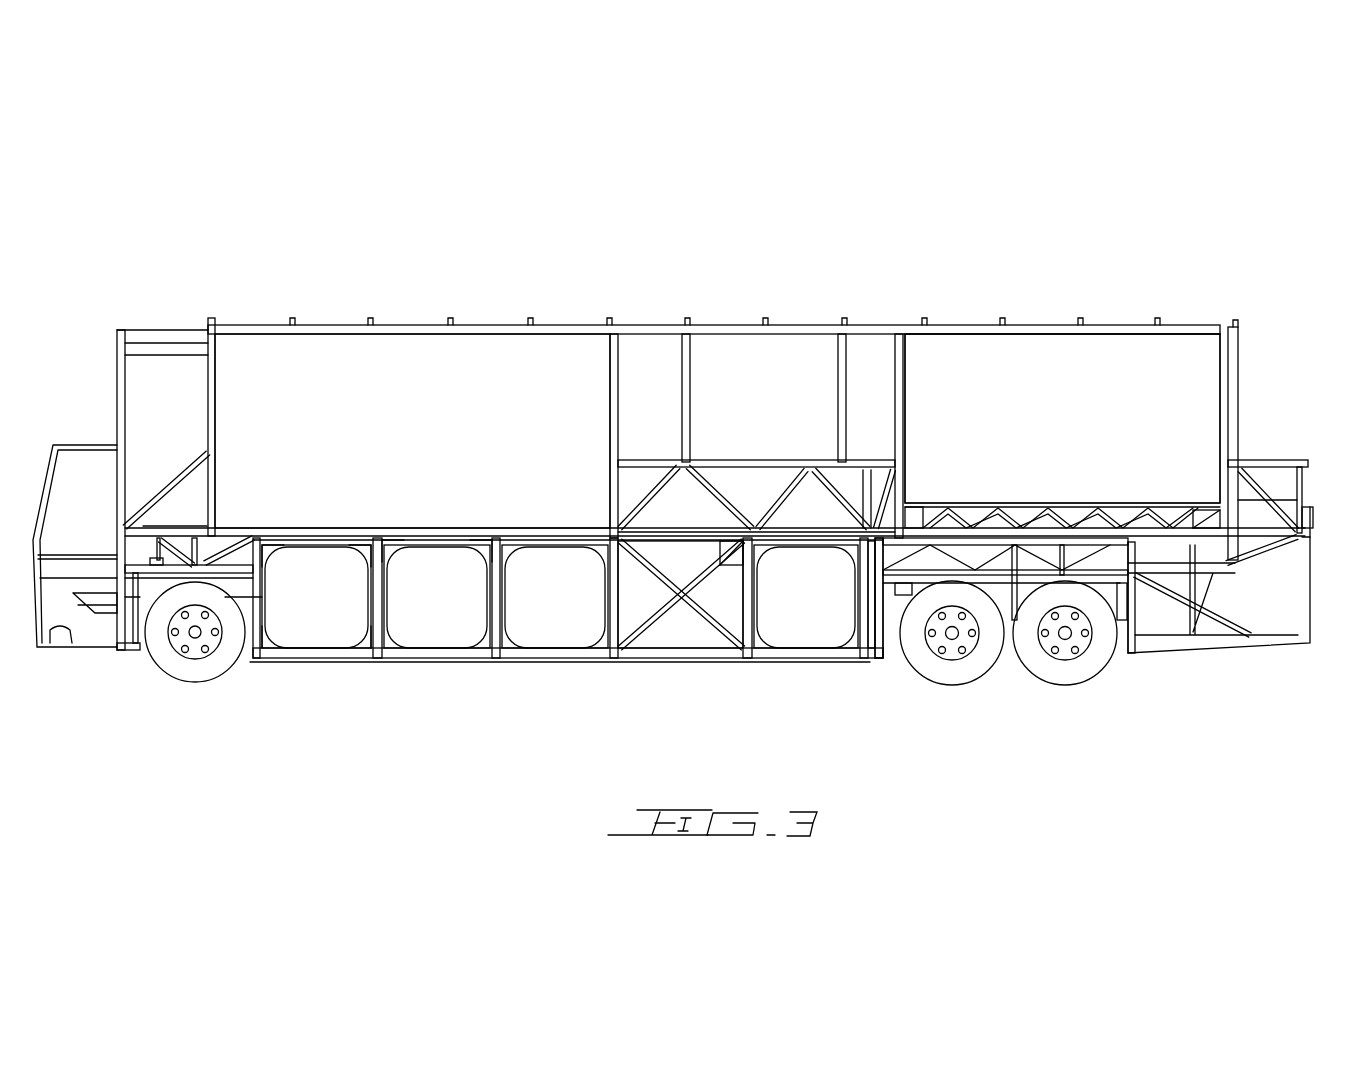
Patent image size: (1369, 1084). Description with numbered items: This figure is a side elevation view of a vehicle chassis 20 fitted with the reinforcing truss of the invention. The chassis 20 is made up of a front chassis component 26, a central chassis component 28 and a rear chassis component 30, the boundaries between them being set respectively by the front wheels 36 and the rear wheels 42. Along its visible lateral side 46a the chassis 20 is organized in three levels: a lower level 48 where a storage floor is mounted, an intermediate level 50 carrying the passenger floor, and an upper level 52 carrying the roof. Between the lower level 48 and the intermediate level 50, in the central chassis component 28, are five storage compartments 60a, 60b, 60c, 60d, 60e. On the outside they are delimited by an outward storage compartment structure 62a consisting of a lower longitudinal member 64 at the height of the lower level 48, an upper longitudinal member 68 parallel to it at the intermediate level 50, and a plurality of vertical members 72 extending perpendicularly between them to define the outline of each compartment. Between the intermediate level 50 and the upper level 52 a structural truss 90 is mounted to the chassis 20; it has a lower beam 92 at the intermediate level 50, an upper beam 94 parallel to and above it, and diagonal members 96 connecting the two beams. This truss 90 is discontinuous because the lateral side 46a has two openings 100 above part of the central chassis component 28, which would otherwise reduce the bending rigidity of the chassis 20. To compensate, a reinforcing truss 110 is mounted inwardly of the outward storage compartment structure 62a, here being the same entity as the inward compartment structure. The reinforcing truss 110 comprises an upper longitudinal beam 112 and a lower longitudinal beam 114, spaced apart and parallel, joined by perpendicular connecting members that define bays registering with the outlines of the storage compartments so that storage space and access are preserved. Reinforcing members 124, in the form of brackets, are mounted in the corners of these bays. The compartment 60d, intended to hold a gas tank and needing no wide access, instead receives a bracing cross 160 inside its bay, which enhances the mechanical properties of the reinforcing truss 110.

The vehicle chassis 20 is at (714, 255).
The front chassis component 26 is at (166, 448).
The central chassis component 28 is at (707, 393).
The rear chassis component 30 is at (1066, 387).
The front wheels 36 is at (195, 648).
The rear wheels 42 is at (1020, 637).
The lateral side 46a is at (1062, 390).
The lower level 48 is at (1244, 617).
The intermediate level 50 is at (1296, 498).
The upper level 52 is at (1280, 425).
The storage compartment 60a is at (316, 625).
The storage compartment 60b is at (437, 624).
The storage compartment 60c is at (555, 625).
The storage compartment 60d is at (680, 625).
The storage compartment 60e is at (806, 627).
The outward storage compartment structure 62a is at (904, 628).
The lower longitudinal member 64 is at (866, 631).
The upper longitudinal member 68 is at (715, 500).
The vertical members 72 is at (574, 648).
The structural truss 90 is at (1062, 482).
The lower beam 92 is at (756, 507).
The upper beam 94 is at (756, 439).
The diagonal members 96 is at (725, 475).
The openings 100 is at (753, 382).
The reinforcing truss 110 is at (568, 686).
The upper longitudinal beam 112 is at (568, 508).
The lower longitudinal beam 114 is at (560, 693).
The reinforcing members 124 is at (377, 594).
The bracing cross 160 is at (669, 624).